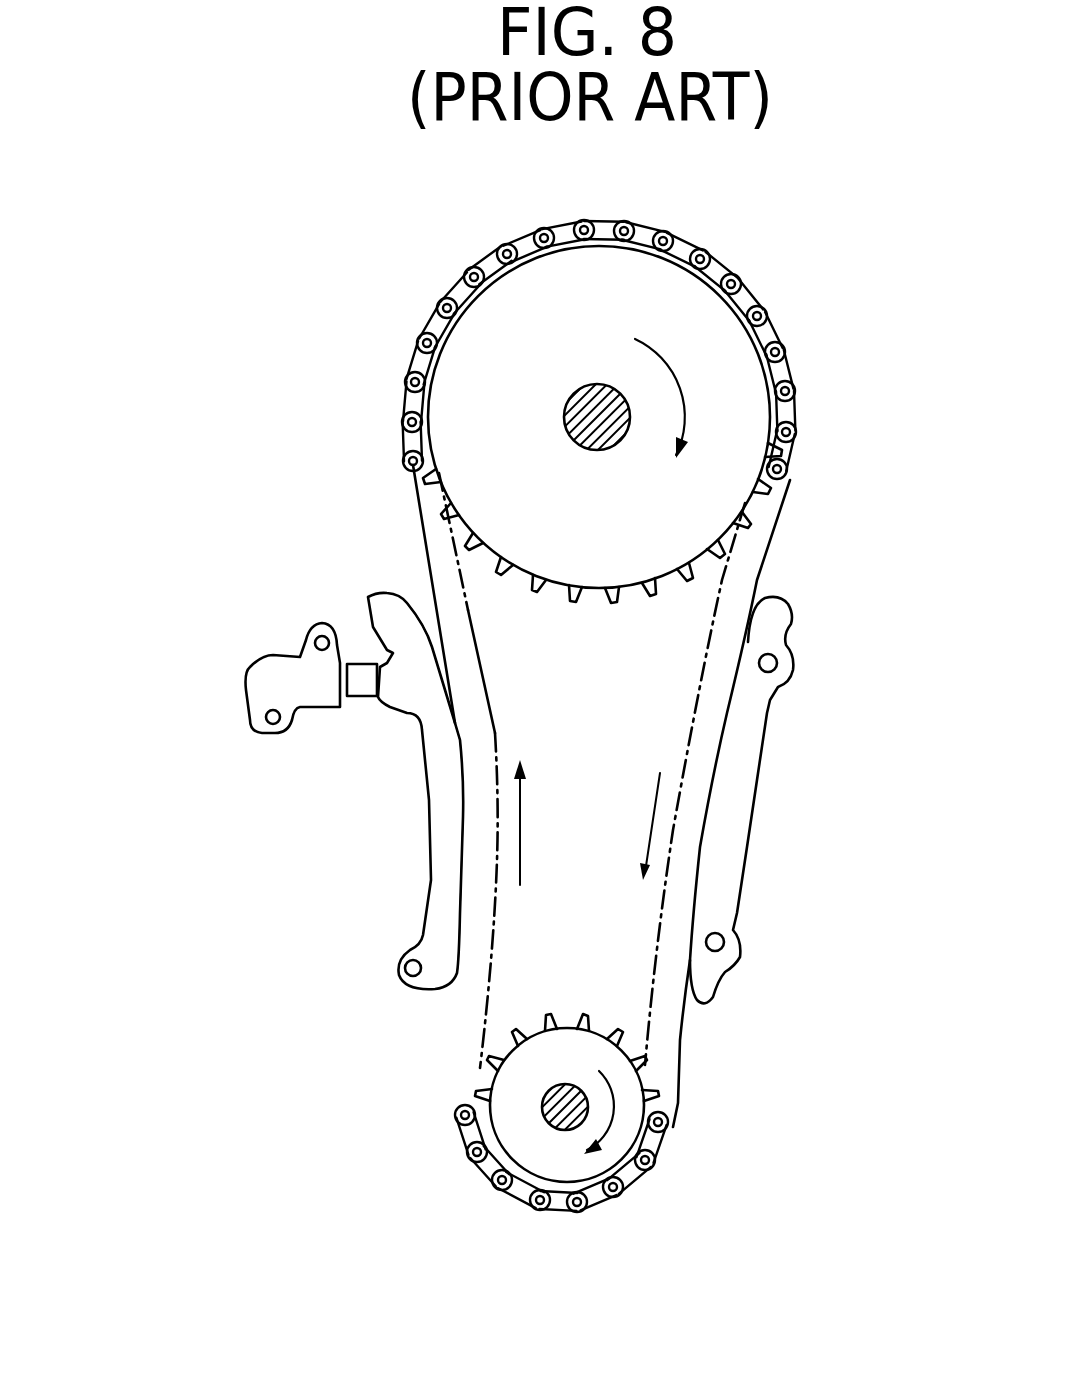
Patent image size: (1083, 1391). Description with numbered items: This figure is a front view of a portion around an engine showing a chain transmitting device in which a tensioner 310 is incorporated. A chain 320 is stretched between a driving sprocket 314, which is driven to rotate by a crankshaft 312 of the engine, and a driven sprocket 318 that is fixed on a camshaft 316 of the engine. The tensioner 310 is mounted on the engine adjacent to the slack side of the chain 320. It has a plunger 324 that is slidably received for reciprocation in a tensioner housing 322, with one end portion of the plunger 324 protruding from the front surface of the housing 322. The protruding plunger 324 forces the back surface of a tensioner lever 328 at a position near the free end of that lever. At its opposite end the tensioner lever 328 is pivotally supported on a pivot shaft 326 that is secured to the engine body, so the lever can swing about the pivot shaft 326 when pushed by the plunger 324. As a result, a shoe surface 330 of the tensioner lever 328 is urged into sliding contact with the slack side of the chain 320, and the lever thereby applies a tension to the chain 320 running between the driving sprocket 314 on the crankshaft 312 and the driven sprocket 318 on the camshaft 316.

The tensioner 310 is at (341, 756).
The crankshaft 312 is at (542, 1106).
The driving sprocket 314 is at (540, 1160).
The camshaft 316 is at (563, 410).
The driven sprocket 318 is at (490, 320).
The chain 320 is at (752, 298).
The tensioner housing 322 is at (262, 683).
The plunger 324 is at (365, 672).
The pivot shaft 326 is at (407, 968).
The tensioner lever 328 is at (420, 791).
The shoe surface 330 is at (463, 753).